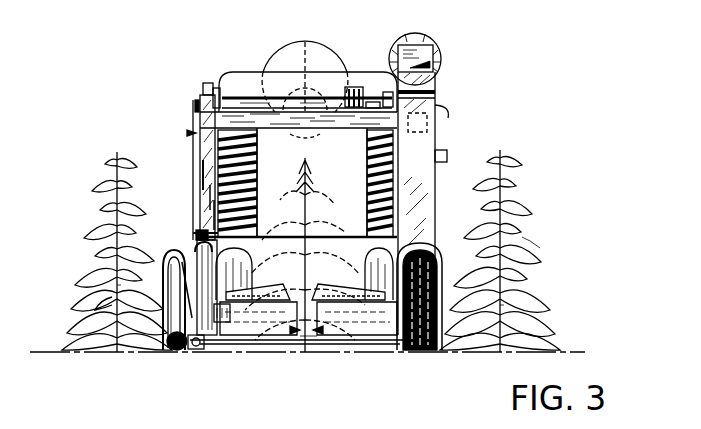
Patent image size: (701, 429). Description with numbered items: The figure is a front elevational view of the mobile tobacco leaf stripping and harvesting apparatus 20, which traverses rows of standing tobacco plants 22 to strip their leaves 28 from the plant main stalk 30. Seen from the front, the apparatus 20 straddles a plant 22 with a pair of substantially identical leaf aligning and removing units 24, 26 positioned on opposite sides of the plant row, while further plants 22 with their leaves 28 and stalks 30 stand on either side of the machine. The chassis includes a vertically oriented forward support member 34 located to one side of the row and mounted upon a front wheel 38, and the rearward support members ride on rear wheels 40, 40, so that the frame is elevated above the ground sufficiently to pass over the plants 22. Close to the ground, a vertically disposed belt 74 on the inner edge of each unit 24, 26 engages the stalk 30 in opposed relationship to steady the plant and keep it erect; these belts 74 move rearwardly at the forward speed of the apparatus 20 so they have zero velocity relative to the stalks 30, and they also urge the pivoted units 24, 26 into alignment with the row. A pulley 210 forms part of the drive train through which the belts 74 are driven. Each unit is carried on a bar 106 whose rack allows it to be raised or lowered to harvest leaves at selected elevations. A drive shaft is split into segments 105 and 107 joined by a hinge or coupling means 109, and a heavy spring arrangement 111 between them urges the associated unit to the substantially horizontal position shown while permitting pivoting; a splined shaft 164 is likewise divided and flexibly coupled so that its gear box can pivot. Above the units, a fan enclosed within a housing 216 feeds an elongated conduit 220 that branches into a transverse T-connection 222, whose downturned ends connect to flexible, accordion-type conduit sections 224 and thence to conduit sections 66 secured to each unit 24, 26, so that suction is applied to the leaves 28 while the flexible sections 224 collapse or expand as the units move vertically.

The mobile tobacco leaf stripping and harvesting apparatus 20 is at (332, 209).
The tobacco plants 22 is at (520, 191).
The leaf aligning and removing unit 24 is at (360, 344).
The leaf aligning and removing unit 26 is at (267, 342).
The leaves 28 is at (530, 247).
The plant main stalk 30 is at (505, 305).
The forward support member 34 is at (432, 140).
The front wheel 38 is at (410, 352).
The rear wheels 40 is at (168, 352).
The conduit section 66 is at (228, 336).
The vertically disposed belt 74 is at (310, 348).
The segment 105 is at (210, 214).
The bar 106 is at (207, 175).
The segment 107 is at (207, 260).
The hinge or coupling means 109 is at (233, 246).
The heavy spring arrangement 111 is at (210, 233).
The splined shaft 164 is at (207, 197).
The pulley 210 is at (196, 353).
The housing 216 is at (330, 58).
The elongated conduit 220 is at (300, 62).
The T-connection 222 is at (248, 80).
The flexible accordion-type conduit sections 224 is at (257, 163).